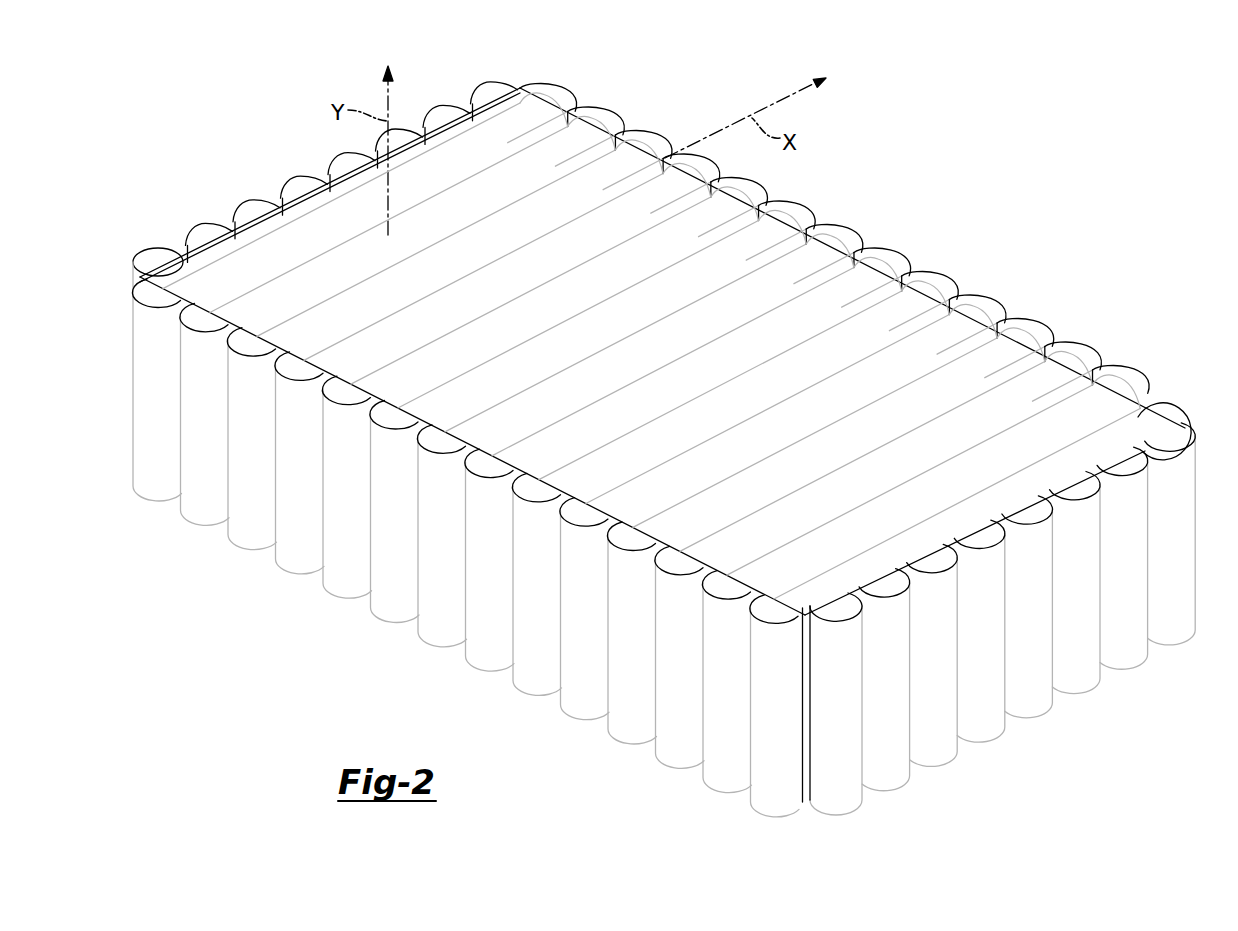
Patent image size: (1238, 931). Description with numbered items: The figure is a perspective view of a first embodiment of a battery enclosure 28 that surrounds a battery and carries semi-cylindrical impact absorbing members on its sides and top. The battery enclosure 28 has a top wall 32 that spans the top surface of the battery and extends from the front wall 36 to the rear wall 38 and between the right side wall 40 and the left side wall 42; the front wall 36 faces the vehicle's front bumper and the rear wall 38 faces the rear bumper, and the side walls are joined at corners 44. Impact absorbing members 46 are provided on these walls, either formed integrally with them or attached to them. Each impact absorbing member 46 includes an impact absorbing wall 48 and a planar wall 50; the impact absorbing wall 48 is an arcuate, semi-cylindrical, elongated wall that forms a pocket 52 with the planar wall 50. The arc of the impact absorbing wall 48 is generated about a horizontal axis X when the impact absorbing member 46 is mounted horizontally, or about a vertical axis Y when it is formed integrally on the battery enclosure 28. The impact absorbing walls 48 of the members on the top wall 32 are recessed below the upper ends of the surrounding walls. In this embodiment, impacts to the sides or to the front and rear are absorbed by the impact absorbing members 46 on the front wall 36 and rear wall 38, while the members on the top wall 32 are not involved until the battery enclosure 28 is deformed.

The battery enclosure 28 is at (894, 198).
The top wall 32 is at (871, 286).
The front wall 36 is at (794, 210).
The rear wall 38 is at (341, 392).
The right side wall 40 is at (1034, 516).
The left side wall 42 is at (302, 182).
The corners 44 is at (806, 767).
The impact absorbing members 46 is at (490, 93).
The impact absorbing wall 48 is at (651, 368).
The planar wall 50 is at (493, 463).
The pocket 52 is at (586, 512).